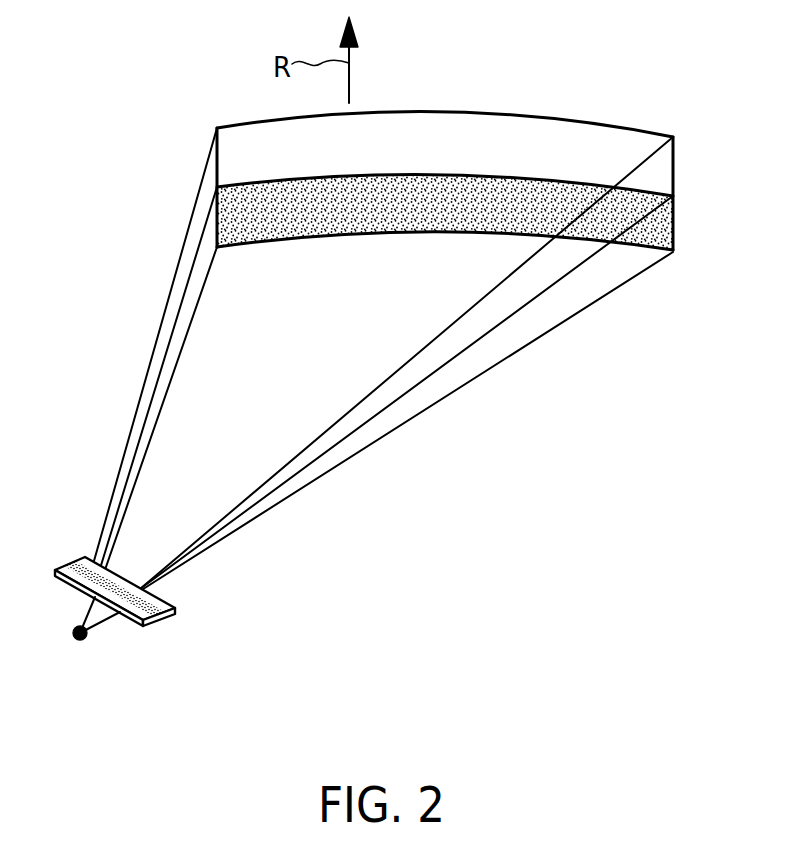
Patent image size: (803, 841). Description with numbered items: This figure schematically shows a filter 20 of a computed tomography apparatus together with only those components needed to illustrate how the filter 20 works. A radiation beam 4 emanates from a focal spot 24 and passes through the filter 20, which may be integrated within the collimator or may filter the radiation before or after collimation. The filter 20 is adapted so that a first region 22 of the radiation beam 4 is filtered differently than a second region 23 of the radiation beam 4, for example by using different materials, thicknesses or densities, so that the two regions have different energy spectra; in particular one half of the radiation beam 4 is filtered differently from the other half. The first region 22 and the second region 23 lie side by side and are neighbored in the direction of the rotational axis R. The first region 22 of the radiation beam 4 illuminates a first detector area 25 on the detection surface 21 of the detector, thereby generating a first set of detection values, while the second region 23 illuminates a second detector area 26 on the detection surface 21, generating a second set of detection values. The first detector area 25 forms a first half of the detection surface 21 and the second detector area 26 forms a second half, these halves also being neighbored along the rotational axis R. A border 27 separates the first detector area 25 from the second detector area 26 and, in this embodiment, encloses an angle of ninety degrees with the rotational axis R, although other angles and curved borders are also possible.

The detection surface 21 is at (392, 157).
The first detector area 25 is at (235, 162).
The second detector area 26 is at (236, 204).
The border 27 is at (390, 191).
The first region 22 is at (514, 294).
The second region 23 is at (369, 440).
The radiation beam 4 is at (465, 406).
The filter 20 is at (177, 604).
The focal spot 24 is at (80, 641).